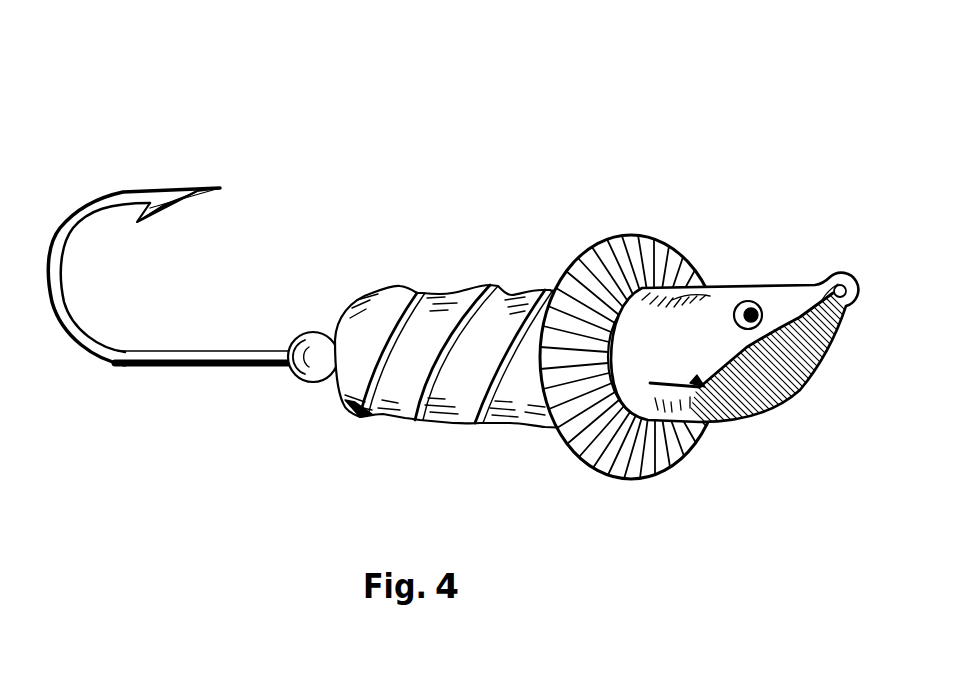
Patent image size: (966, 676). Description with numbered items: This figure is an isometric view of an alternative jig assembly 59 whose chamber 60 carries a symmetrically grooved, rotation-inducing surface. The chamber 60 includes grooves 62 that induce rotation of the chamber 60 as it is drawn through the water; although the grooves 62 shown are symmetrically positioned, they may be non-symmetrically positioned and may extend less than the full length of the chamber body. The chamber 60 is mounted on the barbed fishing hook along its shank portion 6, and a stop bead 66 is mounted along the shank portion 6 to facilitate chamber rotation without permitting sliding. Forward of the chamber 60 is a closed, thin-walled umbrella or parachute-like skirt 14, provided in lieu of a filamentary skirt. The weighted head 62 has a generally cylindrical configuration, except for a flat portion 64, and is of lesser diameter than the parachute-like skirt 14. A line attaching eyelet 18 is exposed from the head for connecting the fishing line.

The jig assembly 59 is at (313, 58).
The shank portion 6 is at (198, 352).
The stop bead 66 is at (307, 335).
The chamber 60 is at (352, 417).
The grooves 62 is at (497, 420).
The parachute-like skirt 14 is at (693, 263).
The flat portion 64 is at (777, 400).
The line attaching eyelet 18 is at (855, 283).